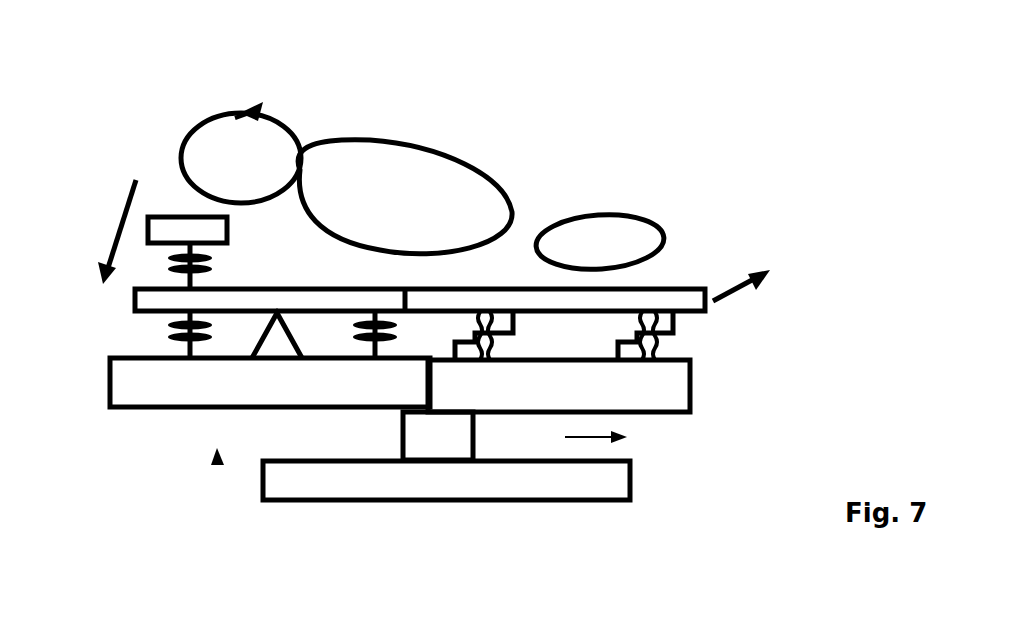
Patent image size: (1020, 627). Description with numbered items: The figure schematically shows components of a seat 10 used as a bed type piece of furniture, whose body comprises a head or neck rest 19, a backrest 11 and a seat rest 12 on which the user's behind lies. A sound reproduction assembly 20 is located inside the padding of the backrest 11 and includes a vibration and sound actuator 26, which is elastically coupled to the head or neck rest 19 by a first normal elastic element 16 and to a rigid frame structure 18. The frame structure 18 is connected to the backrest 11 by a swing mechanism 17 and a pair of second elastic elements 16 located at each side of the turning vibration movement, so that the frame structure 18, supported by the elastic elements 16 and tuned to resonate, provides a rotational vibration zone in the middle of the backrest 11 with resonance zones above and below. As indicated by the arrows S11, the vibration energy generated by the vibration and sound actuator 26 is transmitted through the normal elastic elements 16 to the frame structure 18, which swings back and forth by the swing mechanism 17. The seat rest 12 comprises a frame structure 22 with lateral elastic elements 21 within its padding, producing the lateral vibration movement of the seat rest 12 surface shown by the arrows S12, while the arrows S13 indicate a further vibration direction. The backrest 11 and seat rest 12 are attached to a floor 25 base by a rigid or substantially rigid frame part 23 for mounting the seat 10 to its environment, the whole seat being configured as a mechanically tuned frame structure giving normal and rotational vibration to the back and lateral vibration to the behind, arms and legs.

The seat 10 is at (135, 165).
The backrest 11 is at (128, 383).
The seat rest 12 is at (688, 410).
The elastic element 16 is at (172, 284).
The swing mechanism 17 is at (273, 343).
The frame structure 18 is at (290, 300).
The head or neck rest 19 is at (175, 206).
The vibration and sound actuator 26 is at (187, 230).
The sound reproduction assembly 20 is at (216, 456).
The lateral elastic element 21 is at (660, 300).
The frame structure 22 is at (488, 300).
The frame part 23 is at (438, 438).
The floor 25 is at (577, 470).
The arrows S11 is at (110, 238).
The arrows S12 is at (620, 440).
The third direction S13 is at (738, 294).